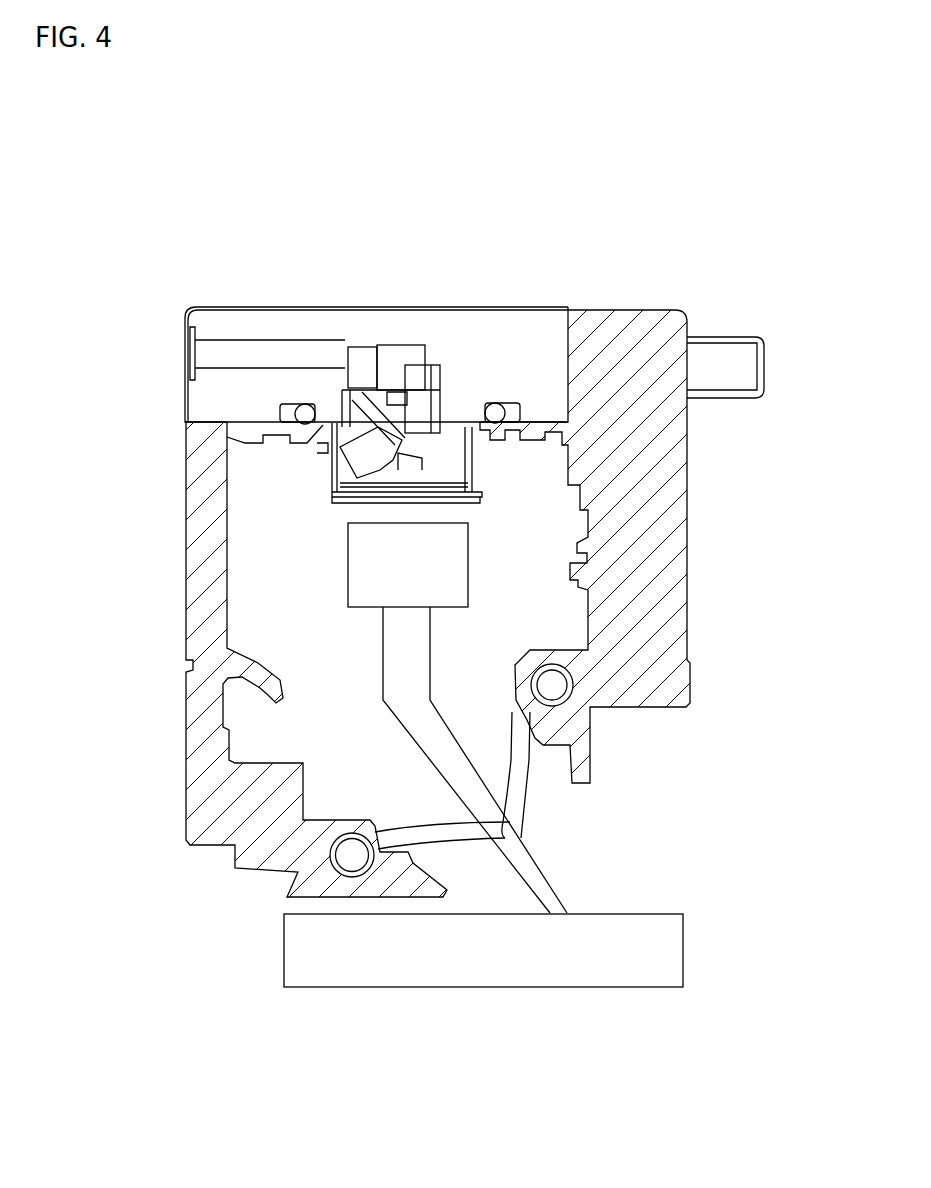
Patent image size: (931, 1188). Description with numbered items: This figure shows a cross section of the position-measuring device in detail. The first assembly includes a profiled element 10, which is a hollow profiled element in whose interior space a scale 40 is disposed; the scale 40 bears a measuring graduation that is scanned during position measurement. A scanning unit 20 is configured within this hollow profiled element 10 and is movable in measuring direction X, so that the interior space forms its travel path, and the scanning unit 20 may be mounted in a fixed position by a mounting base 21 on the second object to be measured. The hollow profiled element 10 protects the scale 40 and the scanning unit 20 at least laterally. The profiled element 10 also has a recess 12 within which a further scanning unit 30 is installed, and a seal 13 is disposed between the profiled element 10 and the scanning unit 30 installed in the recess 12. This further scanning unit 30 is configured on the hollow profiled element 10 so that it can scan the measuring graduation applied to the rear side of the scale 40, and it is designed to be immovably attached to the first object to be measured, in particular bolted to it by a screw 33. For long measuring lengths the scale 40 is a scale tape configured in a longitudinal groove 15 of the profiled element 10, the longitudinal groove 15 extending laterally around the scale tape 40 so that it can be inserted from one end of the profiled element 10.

The profiled element 10 is at (630, 322).
The recess 12 is at (567, 363).
The seal 13 is at (305, 410).
The longitudinal groove 15 is at (480, 500).
The scanning unit 20 is at (442, 565).
The mounting base 21 is at (530, 862).
The further scanning unit 30 is at (377, 403).
The screw 33 is at (733, 353).
The scale 40 is at (387, 500).